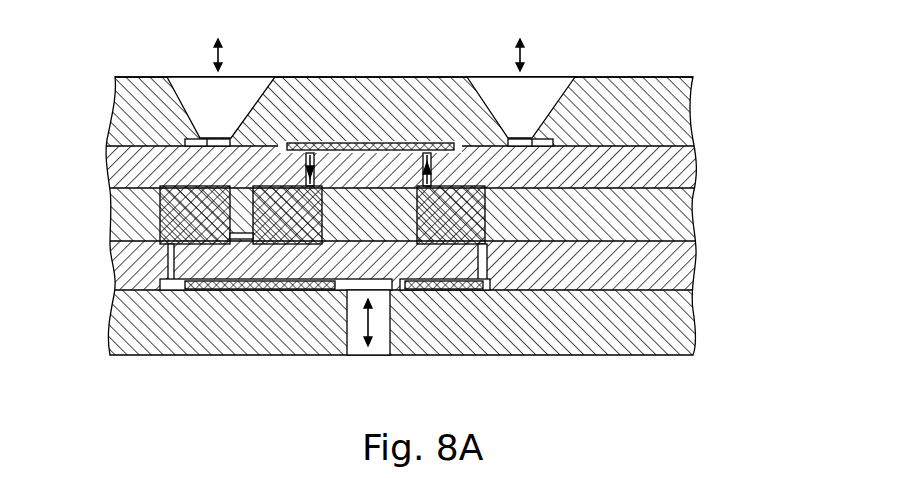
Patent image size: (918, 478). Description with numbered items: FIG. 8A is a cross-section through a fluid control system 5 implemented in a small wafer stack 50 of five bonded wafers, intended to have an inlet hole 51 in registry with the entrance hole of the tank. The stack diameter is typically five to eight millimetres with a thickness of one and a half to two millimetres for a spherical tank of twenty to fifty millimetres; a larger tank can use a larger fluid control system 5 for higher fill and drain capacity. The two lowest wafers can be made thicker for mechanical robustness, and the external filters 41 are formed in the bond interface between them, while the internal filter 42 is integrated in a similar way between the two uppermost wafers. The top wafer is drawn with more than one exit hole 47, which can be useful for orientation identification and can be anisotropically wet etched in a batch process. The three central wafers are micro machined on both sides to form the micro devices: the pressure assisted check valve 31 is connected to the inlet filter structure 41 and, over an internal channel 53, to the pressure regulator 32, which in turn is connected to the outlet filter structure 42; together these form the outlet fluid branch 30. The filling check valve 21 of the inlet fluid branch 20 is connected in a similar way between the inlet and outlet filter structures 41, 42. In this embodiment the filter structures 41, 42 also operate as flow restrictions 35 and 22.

The fluid control system 5 is at (106, 98).
The inlet fluid branch 20 is at (485, 213).
The check valve 21 is at (487, 260).
The flow restriction 22 is at (263, 288).
The outlet fluid branch 30 is at (201, 295).
The pressure assisted check valve 31 is at (197, 222).
The pressure regulator 32 is at (308, 217).
The flow restriction 35 is at (368, 142).
The external filter 41 is at (341, 338).
The internal filter 42 is at (370, 94).
The exit hole 47 is at (203, 88).
The wafer stack 50 is at (672, 76).
The inlet hole 51 is at (372, 358).
The internal channel 53 is at (243, 242).